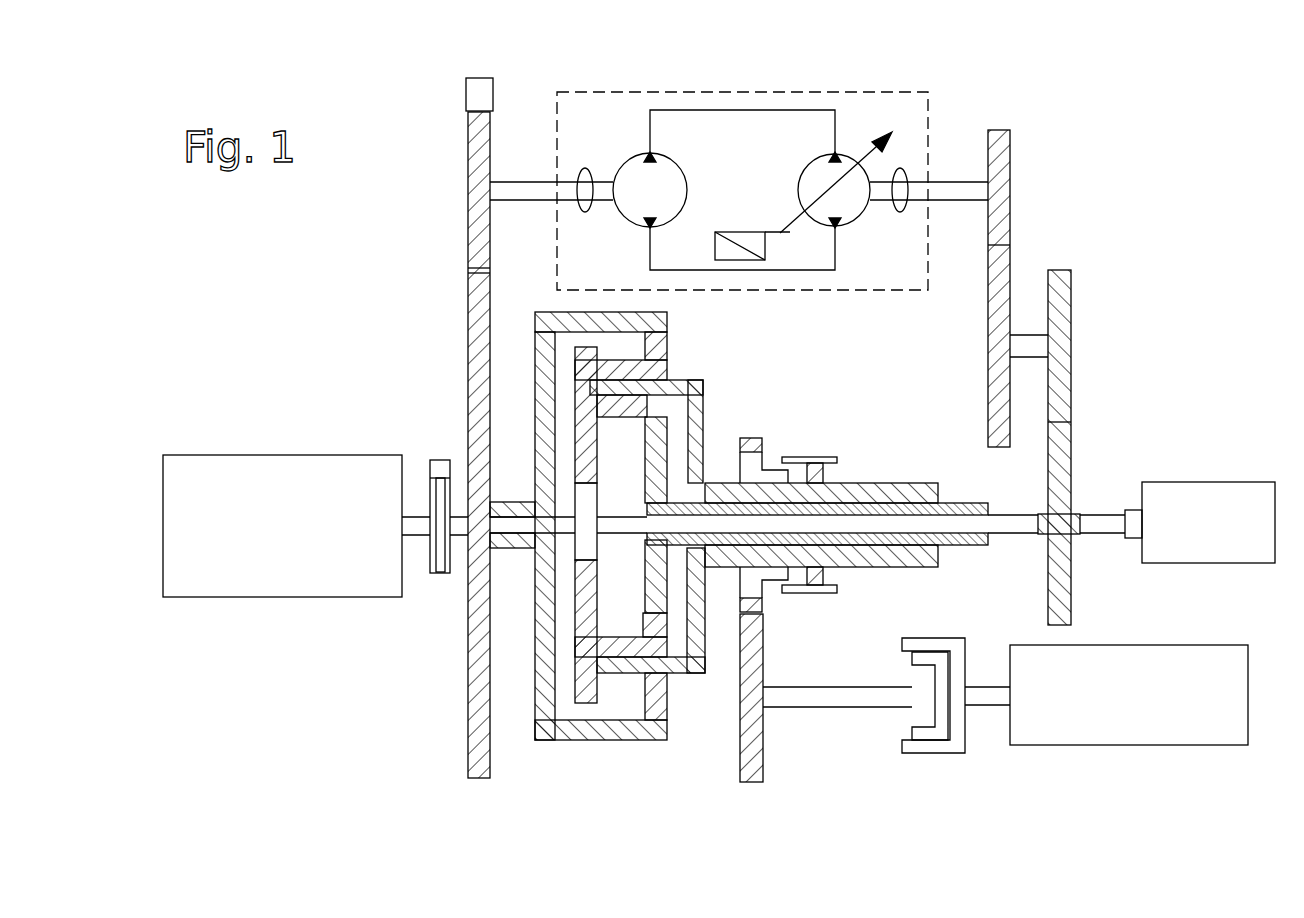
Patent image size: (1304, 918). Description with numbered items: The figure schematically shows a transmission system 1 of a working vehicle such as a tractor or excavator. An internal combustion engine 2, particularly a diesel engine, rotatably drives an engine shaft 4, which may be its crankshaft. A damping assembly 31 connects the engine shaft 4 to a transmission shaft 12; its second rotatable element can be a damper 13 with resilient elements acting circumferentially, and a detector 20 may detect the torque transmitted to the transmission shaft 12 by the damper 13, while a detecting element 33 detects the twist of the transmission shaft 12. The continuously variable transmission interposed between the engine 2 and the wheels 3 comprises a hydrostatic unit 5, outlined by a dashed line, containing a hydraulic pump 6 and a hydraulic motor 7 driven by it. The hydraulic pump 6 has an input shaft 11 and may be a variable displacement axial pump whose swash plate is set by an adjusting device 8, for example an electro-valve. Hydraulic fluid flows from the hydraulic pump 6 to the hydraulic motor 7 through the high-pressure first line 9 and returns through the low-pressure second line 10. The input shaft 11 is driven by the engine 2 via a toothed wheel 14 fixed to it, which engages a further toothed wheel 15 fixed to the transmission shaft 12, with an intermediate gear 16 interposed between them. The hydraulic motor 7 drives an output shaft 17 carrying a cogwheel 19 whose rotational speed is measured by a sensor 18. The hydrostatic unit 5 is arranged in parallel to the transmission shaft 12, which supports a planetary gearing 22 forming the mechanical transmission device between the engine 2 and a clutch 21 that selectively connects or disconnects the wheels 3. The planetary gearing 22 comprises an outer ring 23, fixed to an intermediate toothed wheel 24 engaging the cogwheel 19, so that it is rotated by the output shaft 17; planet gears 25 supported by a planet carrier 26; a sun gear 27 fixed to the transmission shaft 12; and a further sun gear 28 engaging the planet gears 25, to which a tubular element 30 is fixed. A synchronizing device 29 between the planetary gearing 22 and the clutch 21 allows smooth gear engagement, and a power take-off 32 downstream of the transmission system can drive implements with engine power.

The transmission system 1 is at (1150, 108).
The internal combustion engine 2 is at (280, 485).
The wheels 3 is at (1160, 668).
The engine shaft 4 is at (412, 505).
The hydrostatic unit 5 is at (862, 292).
The hydraulic pump 6 is at (868, 215).
The hydraulic motor 7 is at (628, 165).
The adjusting device 8 is at (736, 262).
The first line 9 is at (810, 272).
The second line 10 is at (752, 110).
The input shaft 11 is at (960, 202).
The transmission shaft 12 is at (1020, 546).
The damper 13 is at (453, 570).
The toothed wheel 14 is at (1012, 205).
The further toothed wheel 15 is at (1050, 492).
The intermediate gear 16 is at (1102, 335).
The output shaft 17 is at (522, 182).
The sensor 18 is at (465, 82).
The cogwheel 19 is at (468, 192).
The detector 20 is at (437, 455).
The clutch 21 is at (905, 668).
The planetary gearing 22 is at (535, 780).
The outer ring 23 is at (598, 741).
The intermediate toothed wheel 24 is at (468, 345).
The planet gears 25 is at (660, 350).
The planet carrier 26 is at (700, 433).
The sun gear 27 is at (572, 585).
The further sun gear 28 is at (700, 675).
The synchronizing device 29 is at (812, 456).
The tubular element 30 is at (887, 483).
The damping assembly 31 is at (405, 680).
The power take-off 32 is at (1215, 520).
The detecting element 33 is at (1132, 512).